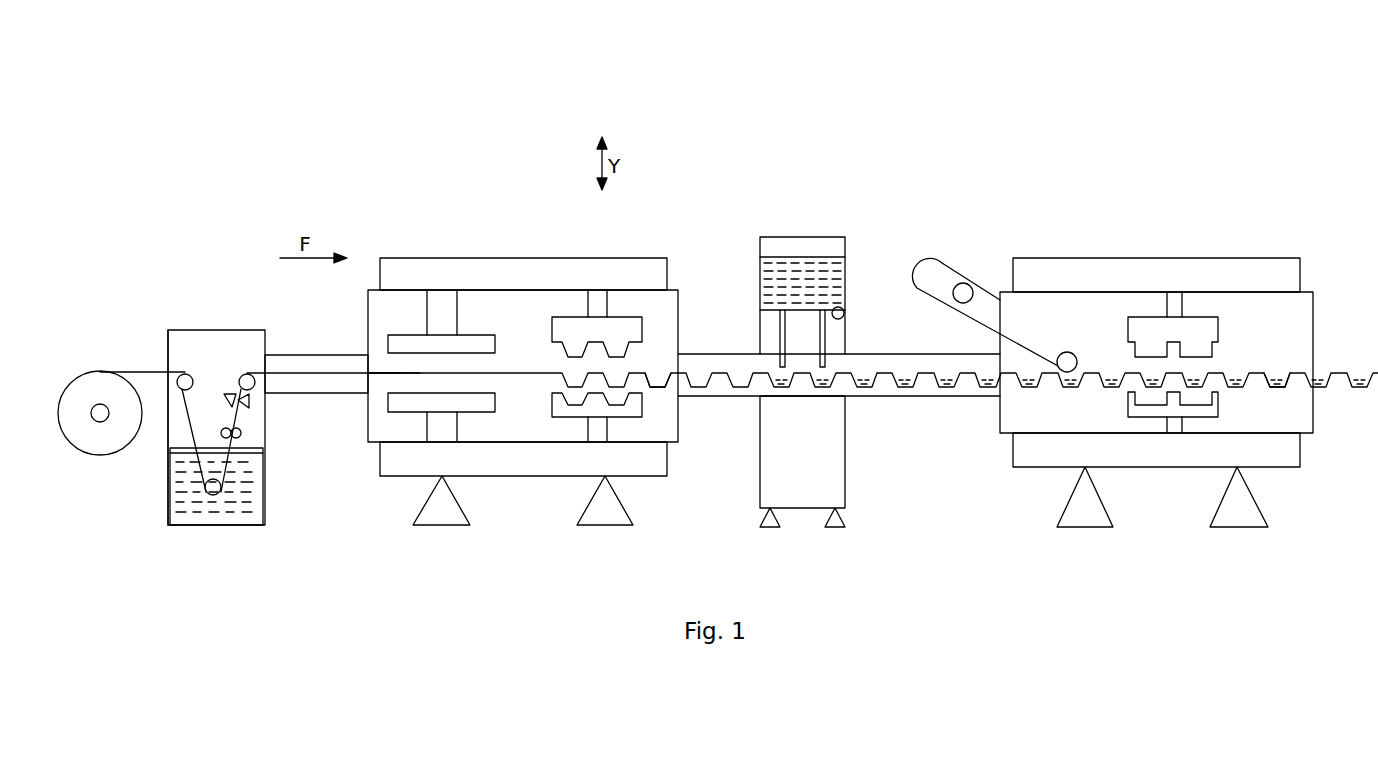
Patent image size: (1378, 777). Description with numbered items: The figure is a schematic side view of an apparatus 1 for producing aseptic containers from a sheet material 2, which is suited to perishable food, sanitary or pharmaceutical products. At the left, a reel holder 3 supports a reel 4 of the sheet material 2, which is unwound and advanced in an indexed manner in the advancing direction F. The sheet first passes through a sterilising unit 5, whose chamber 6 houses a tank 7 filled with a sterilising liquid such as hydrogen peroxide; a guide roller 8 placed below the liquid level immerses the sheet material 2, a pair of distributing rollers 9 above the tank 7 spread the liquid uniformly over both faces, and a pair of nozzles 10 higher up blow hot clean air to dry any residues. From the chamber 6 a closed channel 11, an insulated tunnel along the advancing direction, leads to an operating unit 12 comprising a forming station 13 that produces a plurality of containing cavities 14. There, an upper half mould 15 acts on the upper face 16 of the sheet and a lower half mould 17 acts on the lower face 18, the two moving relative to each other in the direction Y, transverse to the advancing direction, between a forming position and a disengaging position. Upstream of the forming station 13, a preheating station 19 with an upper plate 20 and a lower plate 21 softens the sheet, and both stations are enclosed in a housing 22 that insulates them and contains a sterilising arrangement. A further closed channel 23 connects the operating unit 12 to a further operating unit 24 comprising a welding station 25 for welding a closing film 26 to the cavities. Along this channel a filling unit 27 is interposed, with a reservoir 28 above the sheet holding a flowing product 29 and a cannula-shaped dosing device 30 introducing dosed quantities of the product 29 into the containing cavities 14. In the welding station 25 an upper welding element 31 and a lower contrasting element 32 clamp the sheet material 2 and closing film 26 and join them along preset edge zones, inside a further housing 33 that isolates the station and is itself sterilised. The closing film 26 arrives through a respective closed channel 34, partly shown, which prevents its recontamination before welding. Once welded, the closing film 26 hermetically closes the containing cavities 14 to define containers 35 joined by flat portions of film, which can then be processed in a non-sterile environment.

The apparatus 1 is at (418, 89).
The sheet material 2 is at (142, 372).
The reel holder 3 is at (103, 422).
The reel 4 is at (92, 457).
The sterilising unit 5 is at (213, 306).
The chamber 6 is at (185, 327).
The tank 7 is at (253, 482).
The guide roller 8 is at (213, 495).
The distributing rollers 9 is at (241, 433).
The nozzles 10 is at (228, 396).
The closed channel 11 is at (318, 355).
The operating unit 12 is at (535, 228).
The forming station 13 is at (612, 311).
The containing cavities 14 is at (655, 383).
The upper half mould 15 is at (575, 330).
The upper face 16 is at (537, 373).
The lower half mould 17 is at (563, 408).
The lower face 18 is at (513, 375).
The preheating station 19 is at (417, 318).
The upper plate 20 is at (475, 343).
The lower plate 21 is at (407, 403).
The housing 22 is at (640, 445).
The further closed channel 23 is at (730, 353).
The further operating unit 24 is at (1178, 229).
The welding station 25 is at (1128, 312).
The closing film 26 is at (1020, 338).
The filling unit 27 is at (805, 232).
The reservoir 28 is at (845, 313).
The product 29 is at (812, 272).
The dosing device 30 is at (826, 340).
The upper welding element 31 is at (1198, 330).
The lower contrasting element 32 is at (1148, 413).
The further housing 33 is at (1000, 420).
The closed channel 34 is at (961, 258).
The containers 35 is at (1275, 390).